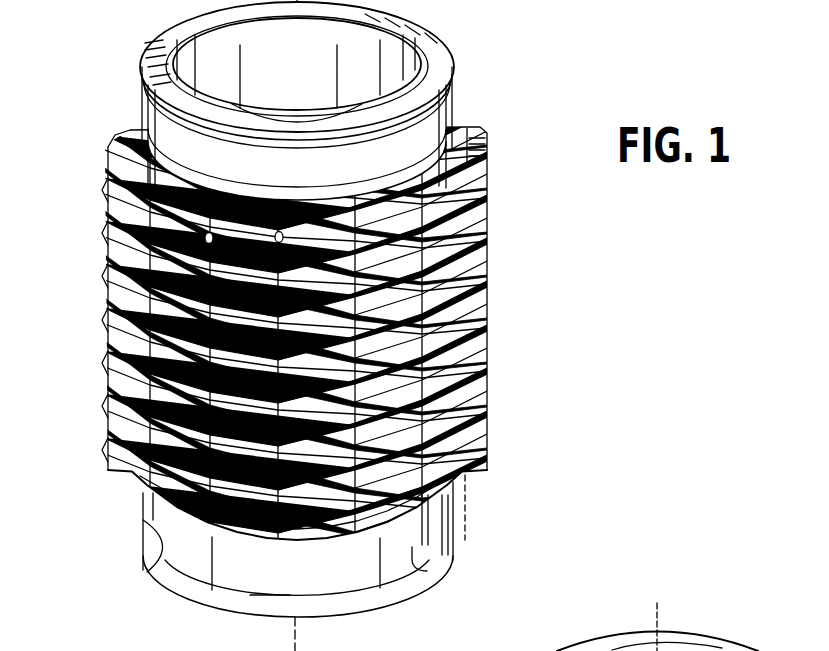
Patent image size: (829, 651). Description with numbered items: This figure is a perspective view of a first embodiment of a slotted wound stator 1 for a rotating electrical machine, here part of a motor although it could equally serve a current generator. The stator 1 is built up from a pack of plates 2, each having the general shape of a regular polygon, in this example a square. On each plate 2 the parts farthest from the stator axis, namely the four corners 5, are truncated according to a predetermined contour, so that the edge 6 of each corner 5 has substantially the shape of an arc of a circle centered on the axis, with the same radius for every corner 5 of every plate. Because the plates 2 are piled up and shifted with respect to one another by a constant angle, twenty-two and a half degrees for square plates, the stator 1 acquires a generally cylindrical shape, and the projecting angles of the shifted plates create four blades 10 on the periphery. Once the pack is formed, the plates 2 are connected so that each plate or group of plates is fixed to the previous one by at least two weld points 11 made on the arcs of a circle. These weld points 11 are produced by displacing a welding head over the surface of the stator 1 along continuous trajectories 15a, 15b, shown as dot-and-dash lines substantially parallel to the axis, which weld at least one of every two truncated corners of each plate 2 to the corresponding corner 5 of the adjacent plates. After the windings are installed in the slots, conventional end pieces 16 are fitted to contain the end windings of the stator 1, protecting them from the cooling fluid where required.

The slotted wound stator 1 is at (500, 156).
The plates 2 is at (483, 302).
The corners 5 is at (430, 345).
The edge 6 is at (462, 343).
The blades 10 is at (110, 402).
The weld points 11 is at (214, 232).
The continuous trajectory 15a is at (467, 518).
The continuous trajectory 15b is at (163, 556).
The end pieces 16 is at (433, 55).